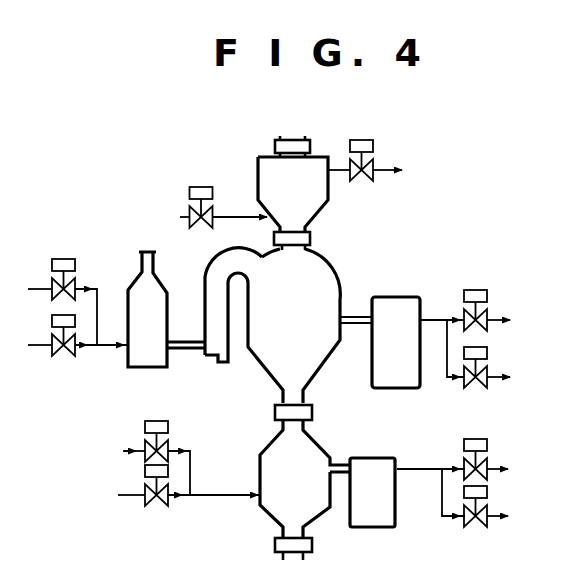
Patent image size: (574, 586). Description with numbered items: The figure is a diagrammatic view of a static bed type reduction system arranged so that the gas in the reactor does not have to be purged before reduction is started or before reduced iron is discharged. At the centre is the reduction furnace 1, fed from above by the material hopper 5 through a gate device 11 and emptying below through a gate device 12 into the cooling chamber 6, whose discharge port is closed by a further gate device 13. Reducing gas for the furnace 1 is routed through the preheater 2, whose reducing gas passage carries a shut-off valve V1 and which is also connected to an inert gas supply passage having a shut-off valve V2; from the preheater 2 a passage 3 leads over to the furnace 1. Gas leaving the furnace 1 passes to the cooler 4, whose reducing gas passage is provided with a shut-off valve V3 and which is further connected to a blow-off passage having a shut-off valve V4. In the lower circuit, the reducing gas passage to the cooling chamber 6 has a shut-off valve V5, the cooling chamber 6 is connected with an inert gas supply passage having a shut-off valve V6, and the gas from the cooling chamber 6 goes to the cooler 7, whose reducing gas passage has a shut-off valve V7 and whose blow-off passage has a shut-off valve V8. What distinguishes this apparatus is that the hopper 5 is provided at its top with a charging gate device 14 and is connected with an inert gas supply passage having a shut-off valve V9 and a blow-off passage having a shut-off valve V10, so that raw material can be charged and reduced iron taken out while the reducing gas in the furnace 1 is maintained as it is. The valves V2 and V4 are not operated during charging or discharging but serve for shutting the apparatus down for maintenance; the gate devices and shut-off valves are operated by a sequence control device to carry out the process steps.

The reduction furnace 1 is at (337, 268).
The preheater 2 is at (128, 288).
The transfer pipe 3 is at (205, 277).
The cooler 4 is at (398, 297).
The material hopper 5 is at (329, 195).
The cooling chamber 6 is at (260, 454).
The cooler 7 is at (383, 458).
The gate device 11 is at (311, 238).
The gate device 12 is at (313, 414).
The gate device 13 is at (313, 547).
The charging gate device 14 is at (310, 141).
The shut-off valve V1 is at (60, 256).
The shut-off valve V2 is at (62, 357).
The shut-off valve V3 is at (483, 291).
The shut-off valve V4 is at (478, 389).
The shut-off valve V5 is at (157, 420).
The shut-off valve V6 is at (152, 509).
The shut-off valve V7 is at (468, 440).
The shut-off valve V8 is at (470, 528).
The shut-off valve V9 is at (200, 187).
The shut-off valve V10 is at (374, 146).